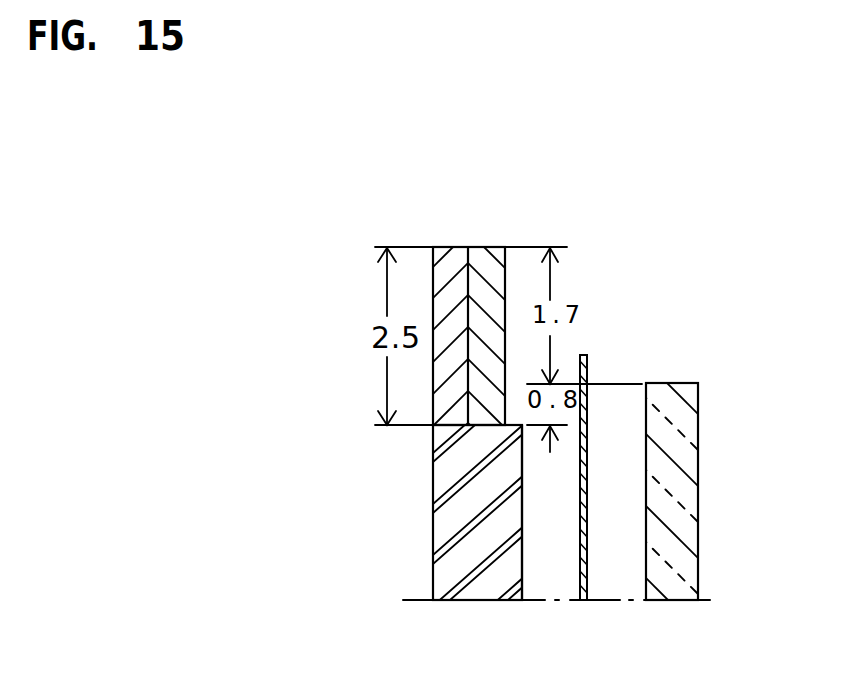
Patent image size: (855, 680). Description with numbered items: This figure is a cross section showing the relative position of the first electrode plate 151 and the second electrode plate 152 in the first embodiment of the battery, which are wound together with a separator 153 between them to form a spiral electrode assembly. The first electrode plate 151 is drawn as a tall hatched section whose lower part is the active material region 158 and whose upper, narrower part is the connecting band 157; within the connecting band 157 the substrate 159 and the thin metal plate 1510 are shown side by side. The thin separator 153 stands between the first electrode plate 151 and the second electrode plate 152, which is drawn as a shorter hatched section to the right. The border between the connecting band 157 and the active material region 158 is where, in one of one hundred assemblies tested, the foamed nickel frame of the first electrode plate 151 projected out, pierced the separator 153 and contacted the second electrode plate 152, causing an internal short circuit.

The first electrode plate 151 is at (445, 520).
The second electrode plate 152 is at (685, 461).
The separator 153 is at (588, 372).
The connecting band 157 is at (470, 316).
The active material region 158 is at (523, 510).
The substrate 159 is at (450, 266).
The thin metal plate 1510 is at (493, 277).